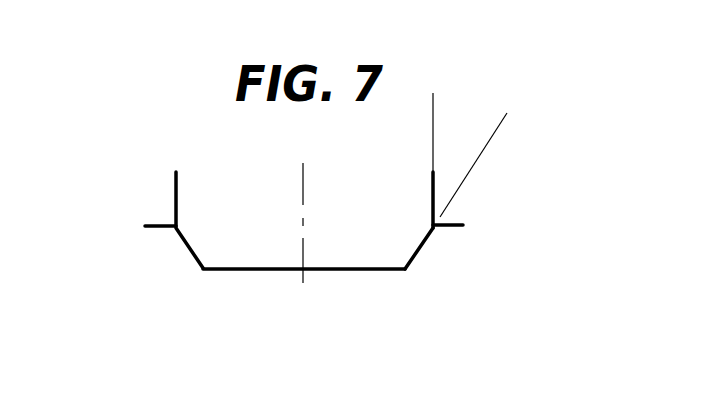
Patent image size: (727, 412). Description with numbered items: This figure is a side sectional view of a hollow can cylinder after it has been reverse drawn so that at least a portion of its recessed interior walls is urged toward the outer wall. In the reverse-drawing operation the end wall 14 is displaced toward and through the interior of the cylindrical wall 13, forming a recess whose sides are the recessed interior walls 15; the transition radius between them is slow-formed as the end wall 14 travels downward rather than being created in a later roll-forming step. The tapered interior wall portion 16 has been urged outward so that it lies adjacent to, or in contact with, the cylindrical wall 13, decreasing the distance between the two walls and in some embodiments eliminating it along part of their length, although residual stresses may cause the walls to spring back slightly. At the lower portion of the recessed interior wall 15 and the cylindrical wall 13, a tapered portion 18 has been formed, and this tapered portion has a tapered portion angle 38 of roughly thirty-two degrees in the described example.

The cylindrical wall 13 is at (172, 200).
The end wall 14 is at (248, 272).
The recessed interior walls 15 is at (190, 247).
The tapered interior wall portion 16 is at (430, 197).
The tapered portion 18 is at (422, 243).
The tapered portion angle 38 is at (500, 116).